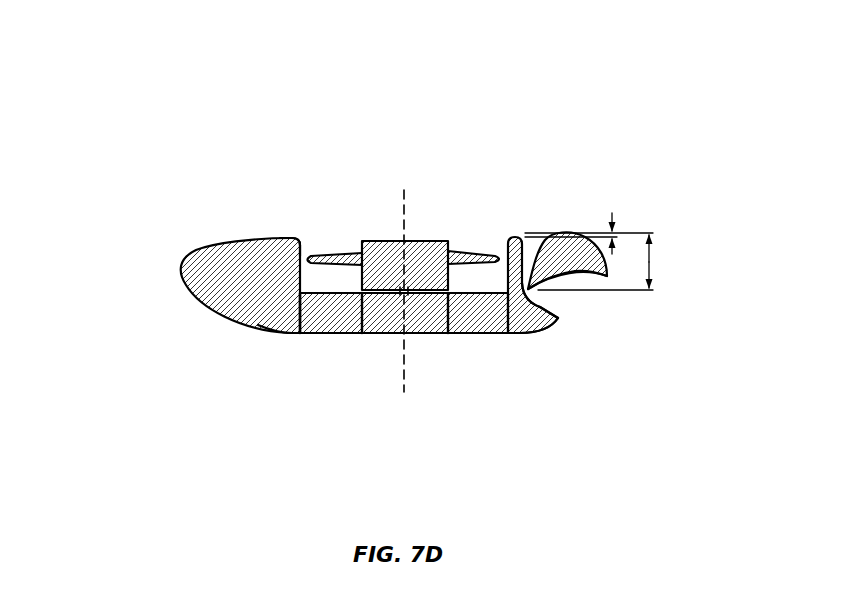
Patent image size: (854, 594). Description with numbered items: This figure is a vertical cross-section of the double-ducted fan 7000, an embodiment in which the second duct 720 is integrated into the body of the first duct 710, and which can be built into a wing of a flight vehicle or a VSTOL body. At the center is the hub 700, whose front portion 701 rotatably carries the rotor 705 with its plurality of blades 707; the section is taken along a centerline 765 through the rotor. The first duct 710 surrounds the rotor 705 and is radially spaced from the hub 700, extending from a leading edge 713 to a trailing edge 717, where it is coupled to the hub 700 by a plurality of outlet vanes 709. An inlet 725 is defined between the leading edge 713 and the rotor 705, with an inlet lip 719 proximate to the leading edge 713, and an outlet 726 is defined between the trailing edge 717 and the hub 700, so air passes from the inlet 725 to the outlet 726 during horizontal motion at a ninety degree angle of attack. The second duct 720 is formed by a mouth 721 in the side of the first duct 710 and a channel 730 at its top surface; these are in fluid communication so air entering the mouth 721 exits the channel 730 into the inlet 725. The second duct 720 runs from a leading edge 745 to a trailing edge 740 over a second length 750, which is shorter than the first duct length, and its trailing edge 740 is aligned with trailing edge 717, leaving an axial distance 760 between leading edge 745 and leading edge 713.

The double-ducted fan 7000 is at (142, 179).
The first duct 710 is at (190, 296).
The leading edge 713 is at (290, 237).
The trailing edge 717 is at (290, 331).
The blades 707 is at (340, 253).
The rotor 705 is at (392, 240).
The centerline 765 is at (403, 192).
The inlet 725 is at (466, 234).
The inlet lip 719 is at (512, 237).
The channel 730 is at (535, 246).
The axial distance 760 is at (612, 213).
The second length 750 is at (650, 262).
The leading edge 745 is at (610, 262).
The second duct 720 is at (582, 265).
The trailing edge 740 is at (545, 295).
The mouth 721 is at (552, 328).
The outlet 726 is at (496, 339).
The hub 700 is at (428, 325).
The front portion 701 is at (402, 295).
The outlet vanes 709 is at (326, 330).